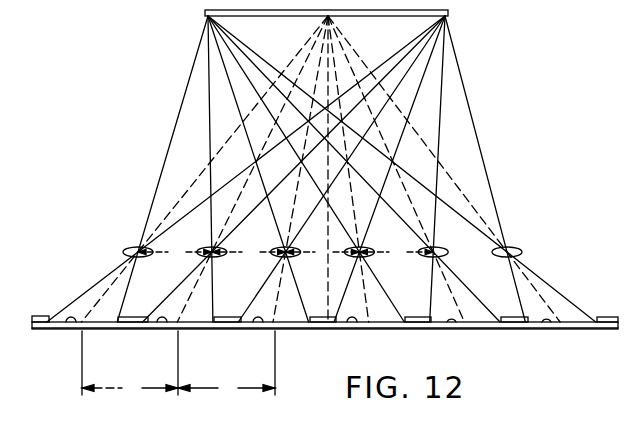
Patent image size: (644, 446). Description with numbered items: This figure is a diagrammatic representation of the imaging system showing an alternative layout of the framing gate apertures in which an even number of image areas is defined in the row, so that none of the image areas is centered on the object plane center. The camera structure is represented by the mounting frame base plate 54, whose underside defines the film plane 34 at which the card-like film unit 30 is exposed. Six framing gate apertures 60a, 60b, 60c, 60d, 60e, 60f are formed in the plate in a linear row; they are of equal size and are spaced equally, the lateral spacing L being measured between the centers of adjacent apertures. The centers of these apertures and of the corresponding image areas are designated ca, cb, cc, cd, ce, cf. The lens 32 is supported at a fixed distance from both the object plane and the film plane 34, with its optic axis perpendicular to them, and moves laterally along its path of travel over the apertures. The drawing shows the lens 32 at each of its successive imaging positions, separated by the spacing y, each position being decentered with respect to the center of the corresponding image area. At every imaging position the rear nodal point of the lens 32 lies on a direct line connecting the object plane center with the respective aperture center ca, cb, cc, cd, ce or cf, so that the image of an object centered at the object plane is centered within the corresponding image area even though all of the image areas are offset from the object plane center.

The film unit 30 is at (178, 365).
The lens 32 is at (521, 250).
The film plane 34 is at (50, 329).
The mounting frame base plate 54 is at (46, 316).
The framing gate aperture 60a is at (542, 322).
The framing gate aperture 60b is at (447, 322).
The framing gate aperture 60c is at (347, 322).
The framing gate aperture 60d is at (253, 322).
The framing gate aperture 60e is at (157, 322).
The framing gate aperture 60f is at (76, 322).
The center of aperture and image area ca is at (562, 321).
The center of aperture and image area cb is at (465, 321).
The center of aperture and image area cc is at (370, 321).
The center of aperture and image area cd is at (275, 321).
The center of aperture and image area ce is at (181, 321).
The center of aperture and image area cf is at (86, 321).
The lens spacing y is at (285, 252).
The lateral spacing L is at (178, 388).